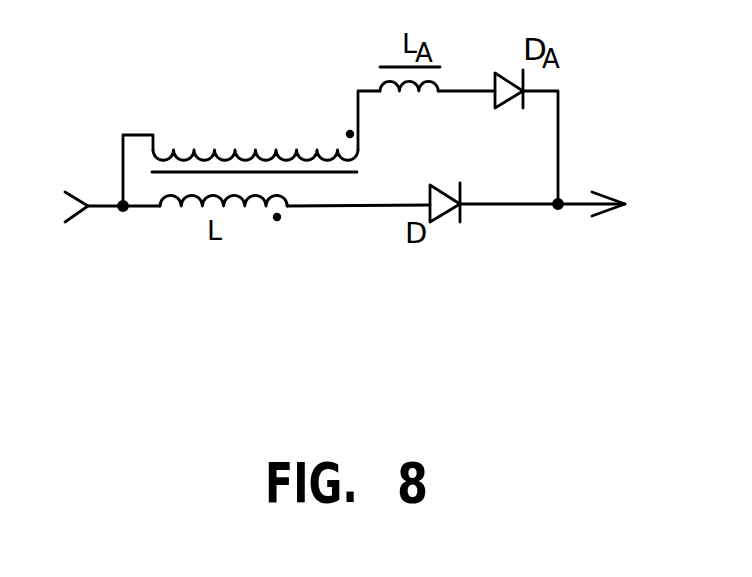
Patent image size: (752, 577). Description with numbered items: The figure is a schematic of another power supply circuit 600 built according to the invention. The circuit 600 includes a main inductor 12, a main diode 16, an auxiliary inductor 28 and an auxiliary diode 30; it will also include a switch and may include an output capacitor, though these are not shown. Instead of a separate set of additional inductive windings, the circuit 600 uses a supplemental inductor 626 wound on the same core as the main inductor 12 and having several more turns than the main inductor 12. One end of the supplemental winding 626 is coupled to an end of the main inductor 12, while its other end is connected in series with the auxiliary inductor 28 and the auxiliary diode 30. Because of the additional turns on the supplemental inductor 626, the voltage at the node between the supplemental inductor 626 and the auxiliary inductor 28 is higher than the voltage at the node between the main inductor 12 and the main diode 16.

The power supply circuit 600 is at (232, 357).
The main inductor 12 is at (203, 207).
The supplemental inductor 626 is at (255, 150).
The auxiliary inductor 28 is at (380, 88).
The auxiliary diode 30 is at (497, 98).
The main diode 16 is at (433, 218).